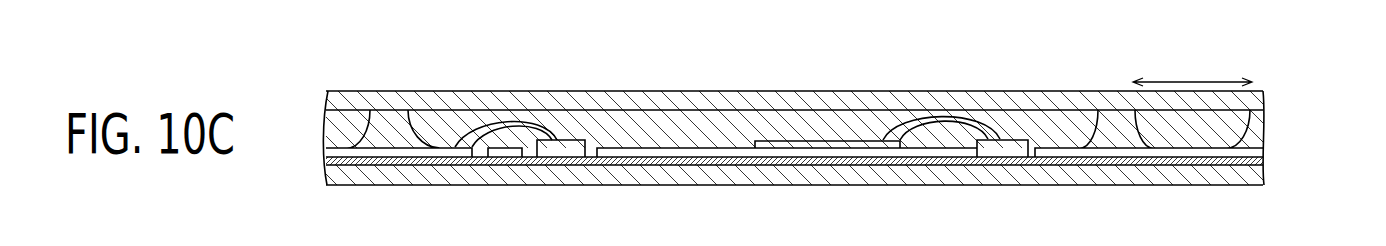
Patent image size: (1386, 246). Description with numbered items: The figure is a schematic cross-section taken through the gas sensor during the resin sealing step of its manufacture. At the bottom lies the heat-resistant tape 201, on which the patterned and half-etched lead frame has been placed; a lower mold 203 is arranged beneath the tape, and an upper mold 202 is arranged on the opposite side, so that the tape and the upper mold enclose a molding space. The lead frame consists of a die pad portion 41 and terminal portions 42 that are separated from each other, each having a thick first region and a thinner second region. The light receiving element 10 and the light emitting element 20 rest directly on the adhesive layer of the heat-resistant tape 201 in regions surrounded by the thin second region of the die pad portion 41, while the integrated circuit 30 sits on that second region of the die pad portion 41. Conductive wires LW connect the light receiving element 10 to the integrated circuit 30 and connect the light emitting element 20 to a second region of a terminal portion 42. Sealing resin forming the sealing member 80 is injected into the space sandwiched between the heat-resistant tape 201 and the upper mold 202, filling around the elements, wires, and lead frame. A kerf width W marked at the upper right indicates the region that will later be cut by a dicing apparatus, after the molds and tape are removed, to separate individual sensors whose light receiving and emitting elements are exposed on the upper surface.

The light receiving element 10 is at (1003, 148).
The light emitting element 20 is at (562, 150).
The integrated circuit 30 is at (818, 143).
The die pad portion 41 is at (502, 198).
The terminal portions 42 is at (439, 198).
The sealing member 80 is at (692, 125).
The conductive wires LW is at (503, 123).
The kerf width W is at (1192, 68).
The heat-resistant tape 201 is at (1263, 161).
The upper mold 202 is at (1263, 97).
The lower mold 203 is at (1227, 173).